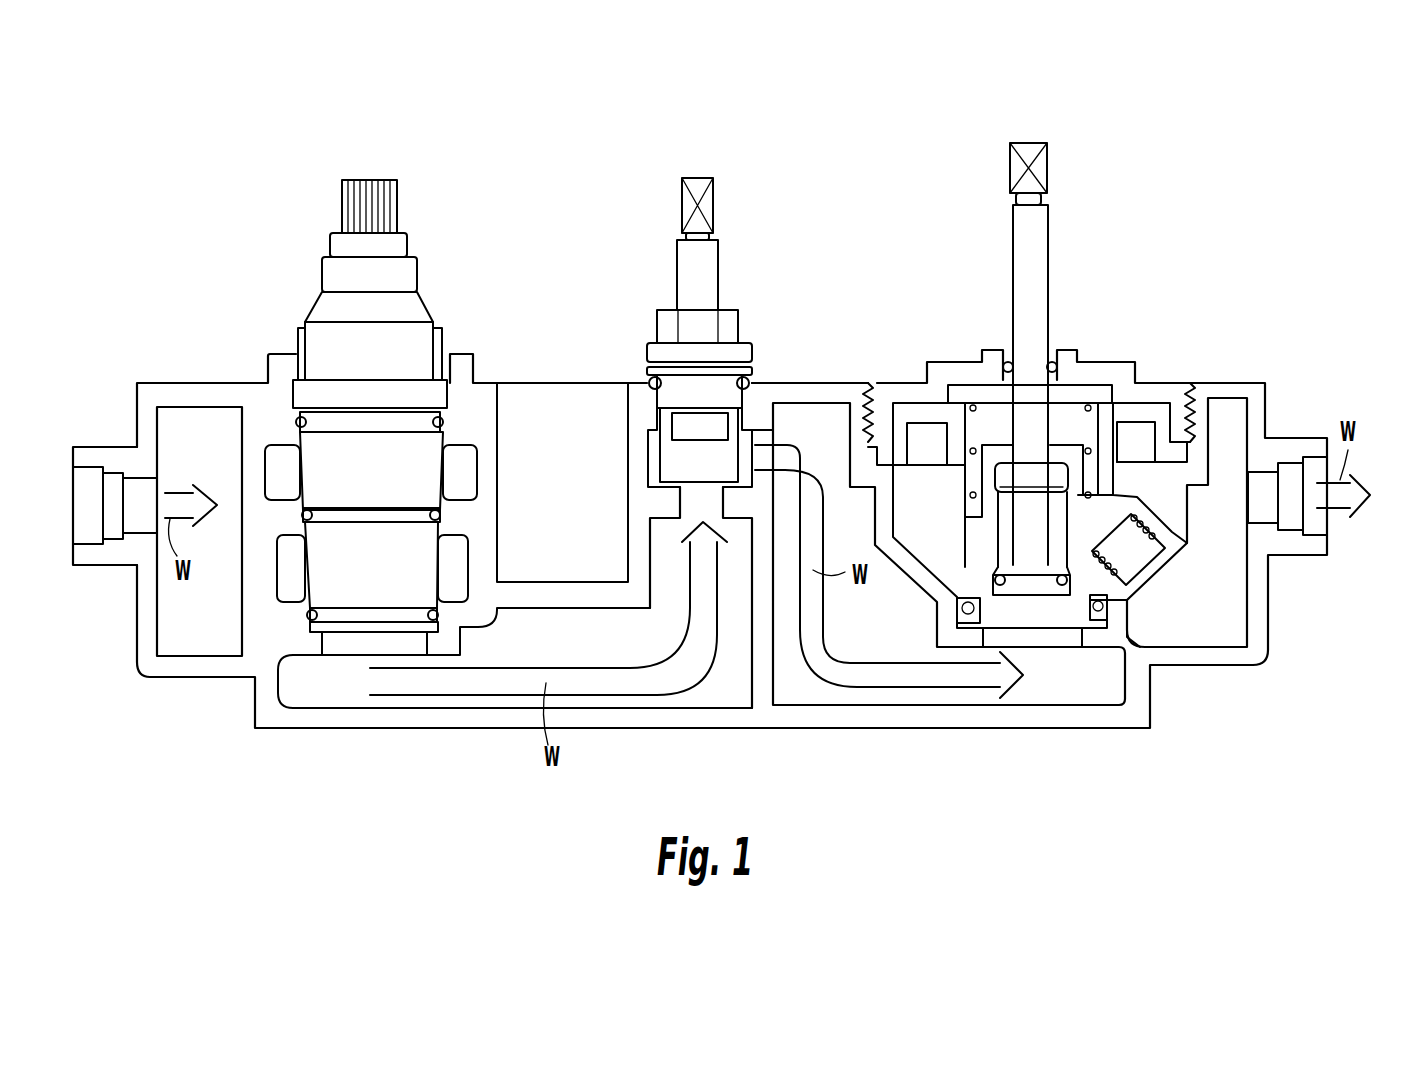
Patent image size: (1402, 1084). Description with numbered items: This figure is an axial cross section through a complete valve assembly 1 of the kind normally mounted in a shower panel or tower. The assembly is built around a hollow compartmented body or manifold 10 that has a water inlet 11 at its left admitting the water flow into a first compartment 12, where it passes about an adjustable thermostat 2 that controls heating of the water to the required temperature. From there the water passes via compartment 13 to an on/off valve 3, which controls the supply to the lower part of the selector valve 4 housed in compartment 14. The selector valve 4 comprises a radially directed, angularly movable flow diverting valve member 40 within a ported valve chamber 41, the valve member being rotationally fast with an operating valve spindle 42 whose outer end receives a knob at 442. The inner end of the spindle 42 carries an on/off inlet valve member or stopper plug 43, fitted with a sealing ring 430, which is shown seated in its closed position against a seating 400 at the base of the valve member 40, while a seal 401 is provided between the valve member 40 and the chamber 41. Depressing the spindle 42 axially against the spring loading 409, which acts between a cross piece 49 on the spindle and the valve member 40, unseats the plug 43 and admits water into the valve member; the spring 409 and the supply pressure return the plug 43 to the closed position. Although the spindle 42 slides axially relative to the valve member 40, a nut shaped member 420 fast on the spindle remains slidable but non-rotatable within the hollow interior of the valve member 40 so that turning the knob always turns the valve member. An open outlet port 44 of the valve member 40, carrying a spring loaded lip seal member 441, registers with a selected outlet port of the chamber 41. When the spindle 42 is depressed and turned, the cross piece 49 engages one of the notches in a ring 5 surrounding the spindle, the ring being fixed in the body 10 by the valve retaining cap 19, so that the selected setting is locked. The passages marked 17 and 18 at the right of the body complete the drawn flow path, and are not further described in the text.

The valve assembly 1 is at (786, 368).
The adjustable thermostat 2 is at (330, 352).
The on/off valve 3 is at (648, 355).
The selector valve 4 is at (1066, 420).
The ring 5 is at (953, 447).
The body 10 is at (197, 388).
The water inlet 11 is at (83, 514).
The compartment 12 is at (192, 642).
The compartment 13 is at (663, 567).
The compartment 14 is at (813, 428).
The outlet passage 17 is at (1232, 420).
The outlet fitting 18 is at (1317, 525).
The valve retaining cap 19 is at (1120, 390).
The flow diverting valve member 40 is at (987, 517).
The valve chamber 41 is at (1118, 620).
The valve spindle 42 is at (1050, 232).
The stopper plug 43 is at (1043, 585).
The outlet port 44 is at (1130, 545).
The cross piece 49 is at (978, 393).
The seating 400 is at (990, 597).
The seal 401 is at (957, 605).
The spring loading 409 is at (1092, 448).
The nut shaped member 420 is at (1058, 480).
The sealing ring 430 is at (997, 578).
The lip seal member 441 is at (1130, 575).
The knob location 442 is at (1018, 172).